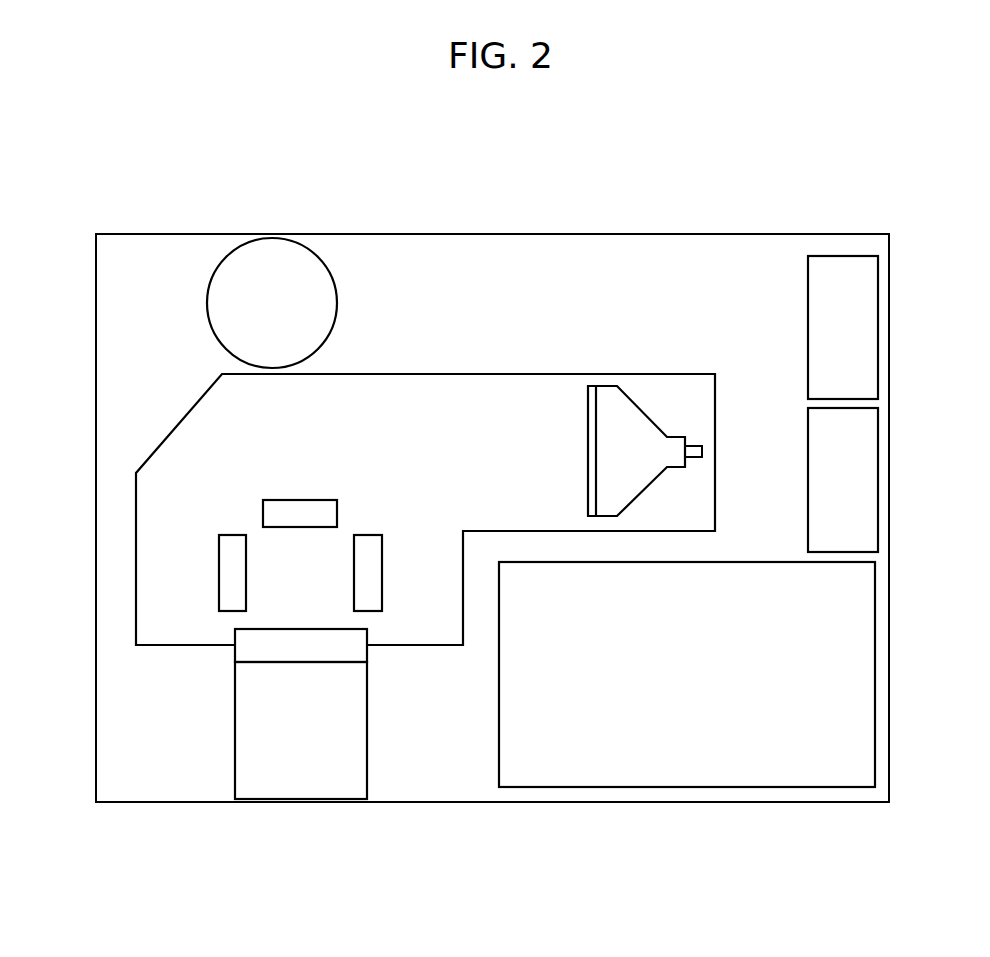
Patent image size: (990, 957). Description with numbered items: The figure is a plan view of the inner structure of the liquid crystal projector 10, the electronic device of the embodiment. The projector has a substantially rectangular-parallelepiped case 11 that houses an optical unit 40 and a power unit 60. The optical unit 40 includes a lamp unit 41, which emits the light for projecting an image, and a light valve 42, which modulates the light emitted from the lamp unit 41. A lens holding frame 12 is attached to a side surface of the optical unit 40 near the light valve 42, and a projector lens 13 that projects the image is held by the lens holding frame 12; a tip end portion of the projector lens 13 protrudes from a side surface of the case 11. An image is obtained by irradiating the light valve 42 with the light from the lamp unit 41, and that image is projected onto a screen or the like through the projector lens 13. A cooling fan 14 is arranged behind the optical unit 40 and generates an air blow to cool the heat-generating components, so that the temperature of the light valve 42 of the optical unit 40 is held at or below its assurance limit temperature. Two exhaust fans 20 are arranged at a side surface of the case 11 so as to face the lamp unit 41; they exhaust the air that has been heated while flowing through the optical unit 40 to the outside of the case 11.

The liquid crystal projector 10 is at (515, 159).
The case 11 is at (133, 386).
The lens holding frame 12 is at (257, 647).
The projector lens 13 is at (258, 775).
The cooling fan 14 is at (262, 308).
The exhaust fans 20 is at (843, 338).
The optical unit 40 is at (423, 400).
The lamp unit 41 is at (605, 398).
The light valve 42 is at (235, 573).
The power unit 60 is at (626, 773).